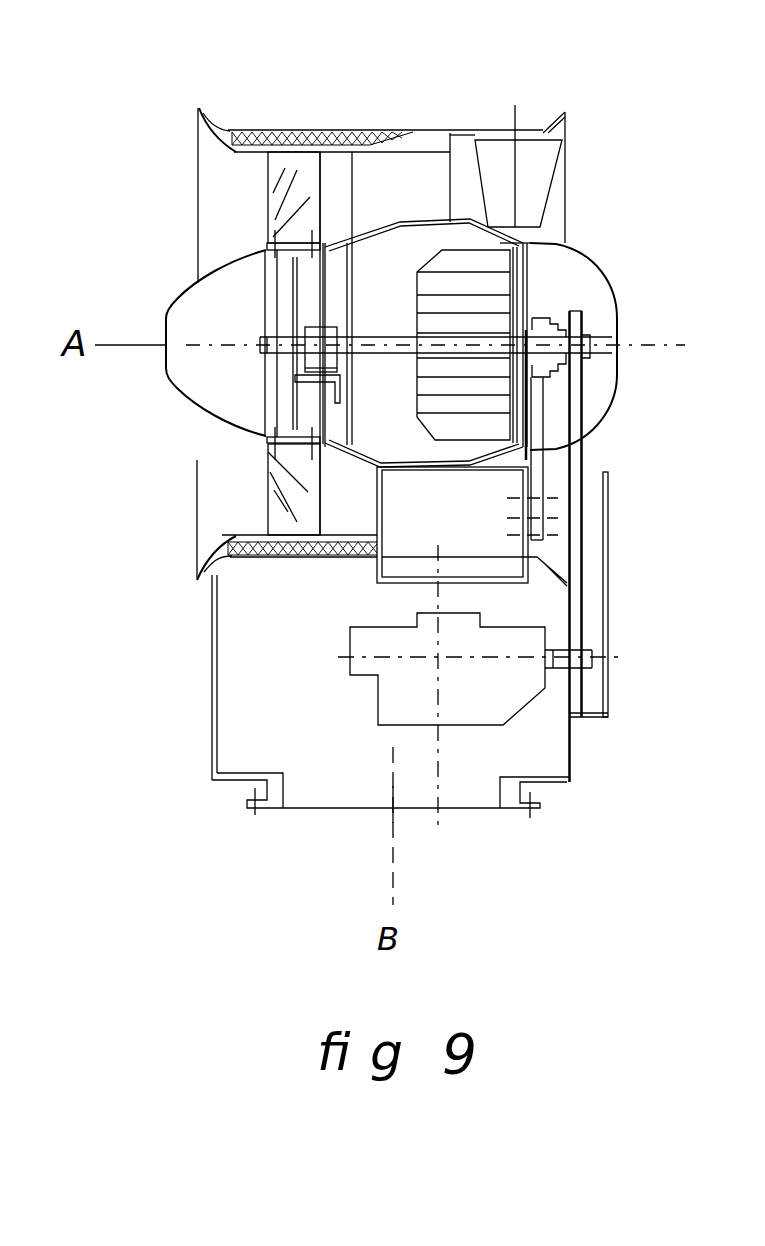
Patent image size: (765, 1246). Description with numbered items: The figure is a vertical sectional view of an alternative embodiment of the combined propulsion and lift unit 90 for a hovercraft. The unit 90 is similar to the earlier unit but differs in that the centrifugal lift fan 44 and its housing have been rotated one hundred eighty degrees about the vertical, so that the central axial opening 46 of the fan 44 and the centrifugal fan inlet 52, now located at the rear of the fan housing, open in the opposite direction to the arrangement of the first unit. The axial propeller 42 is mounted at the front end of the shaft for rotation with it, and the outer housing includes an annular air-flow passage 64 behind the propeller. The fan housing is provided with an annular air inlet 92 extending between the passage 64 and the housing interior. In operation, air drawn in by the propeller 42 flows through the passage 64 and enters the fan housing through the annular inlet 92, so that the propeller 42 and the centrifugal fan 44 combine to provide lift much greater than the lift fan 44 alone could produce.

The propulsion and lift unit 90 is at (411, 97).
The propeller 42 is at (269, 183).
The annular air-flow passage 64 is at (370, 344).
The annular air inlet 92 is at (379, 222).
The centrifugal fan inlet 52 is at (432, 213).
The central axial opening 46 is at (416, 305).
The centrifugal fan wheel 44 is at (468, 432).